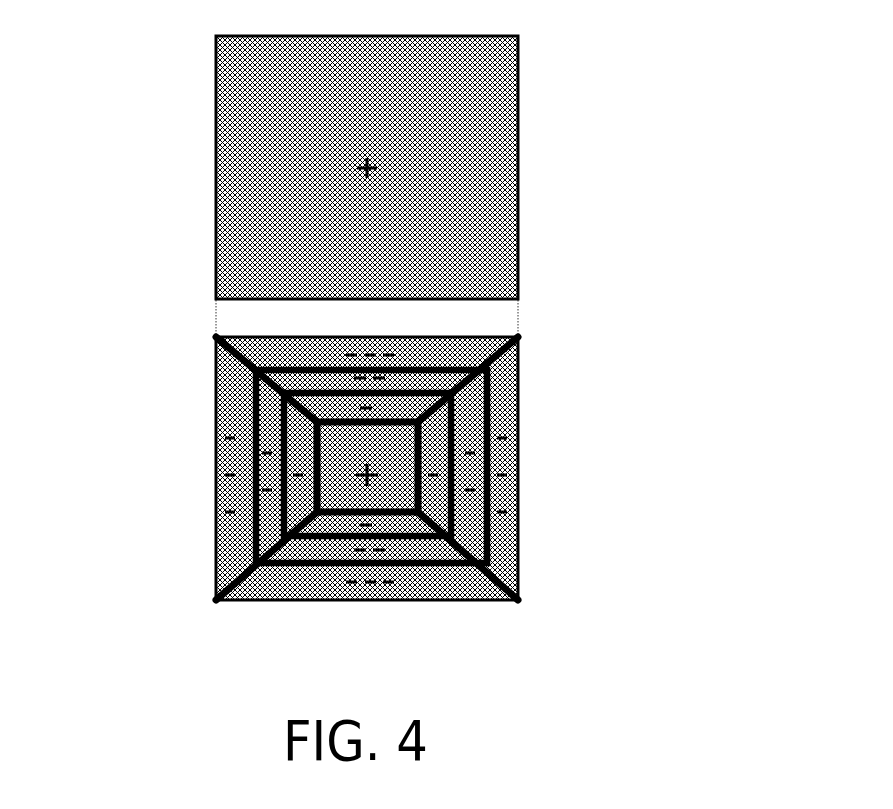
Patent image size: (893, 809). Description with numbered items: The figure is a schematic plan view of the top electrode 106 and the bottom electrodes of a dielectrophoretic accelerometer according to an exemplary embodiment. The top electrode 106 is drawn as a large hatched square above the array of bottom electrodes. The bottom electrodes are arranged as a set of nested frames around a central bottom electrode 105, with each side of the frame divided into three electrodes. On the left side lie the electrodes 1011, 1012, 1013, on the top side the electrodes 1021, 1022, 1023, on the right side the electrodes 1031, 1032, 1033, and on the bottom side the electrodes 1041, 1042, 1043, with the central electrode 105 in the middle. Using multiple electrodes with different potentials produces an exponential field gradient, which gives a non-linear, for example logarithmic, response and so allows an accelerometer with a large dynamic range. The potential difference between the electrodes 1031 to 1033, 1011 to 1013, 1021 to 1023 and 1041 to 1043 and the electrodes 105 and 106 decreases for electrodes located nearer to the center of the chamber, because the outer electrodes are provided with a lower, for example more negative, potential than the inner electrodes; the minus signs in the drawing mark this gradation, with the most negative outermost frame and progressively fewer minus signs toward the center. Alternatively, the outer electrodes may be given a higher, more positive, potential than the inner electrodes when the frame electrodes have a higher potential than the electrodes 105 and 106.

The top electrode 106 is at (518, 175).
The bottom electrode 105 is at (388, 458).
The electrode 1011 is at (233, 562).
The electrode 1012 is at (265, 505).
The electrode 1013 is at (297, 437).
The electrode 1021 is at (320, 402).
The electrode 1022 is at (422, 377).
The electrode 1023 is at (485, 352).
The electrode 1031 is at (508, 542).
The electrode 1032 is at (472, 467).
The electrode 1033 is at (437, 433).
The electrode 1041 is at (449, 573).
The electrode 1042 is at (338, 548).
The electrode 1043 is at (323, 528).